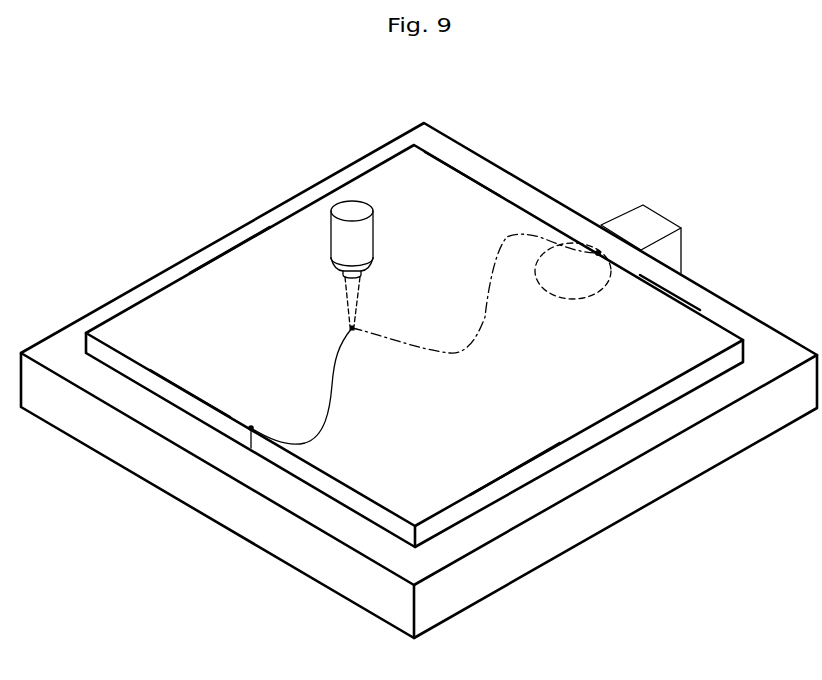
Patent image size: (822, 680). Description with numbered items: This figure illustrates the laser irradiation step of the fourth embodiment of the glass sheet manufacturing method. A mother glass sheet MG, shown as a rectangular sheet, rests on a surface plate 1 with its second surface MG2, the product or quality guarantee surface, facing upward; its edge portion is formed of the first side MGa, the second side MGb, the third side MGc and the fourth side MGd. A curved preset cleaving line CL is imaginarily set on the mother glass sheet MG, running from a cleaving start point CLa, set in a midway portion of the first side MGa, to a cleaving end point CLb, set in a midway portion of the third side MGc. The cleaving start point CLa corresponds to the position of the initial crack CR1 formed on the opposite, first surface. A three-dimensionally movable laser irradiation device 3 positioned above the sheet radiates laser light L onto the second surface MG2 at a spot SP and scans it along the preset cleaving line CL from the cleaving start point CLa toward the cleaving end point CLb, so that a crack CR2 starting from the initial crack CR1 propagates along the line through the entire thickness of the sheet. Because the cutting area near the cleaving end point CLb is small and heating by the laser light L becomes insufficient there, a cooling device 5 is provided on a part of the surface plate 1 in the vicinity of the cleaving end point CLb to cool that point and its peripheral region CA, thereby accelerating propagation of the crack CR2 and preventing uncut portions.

The surface plate 1 is at (665, 467).
The laser irradiation device 3 is at (352, 208).
The cooling device 5 is at (648, 222).
The second surface MG2 is at (163, 318).
The mother glass sheet MG is at (671, 293).
The first side MGa is at (185, 390).
The second side MGb is at (513, 470).
The third side MGc is at (457, 168).
The fourth side MGd is at (231, 247).
The laser light L is at (360, 295).
The start point SP is at (353, 333).
The preset cleaving line CL is at (507, 235).
The cleaving start point CLa is at (252, 431).
The cleaving end point CLb is at (598, 253).
The peripheral region CA is at (580, 300).
The initial crack CR1 is at (250, 447).
The crack CR2 is at (332, 370).